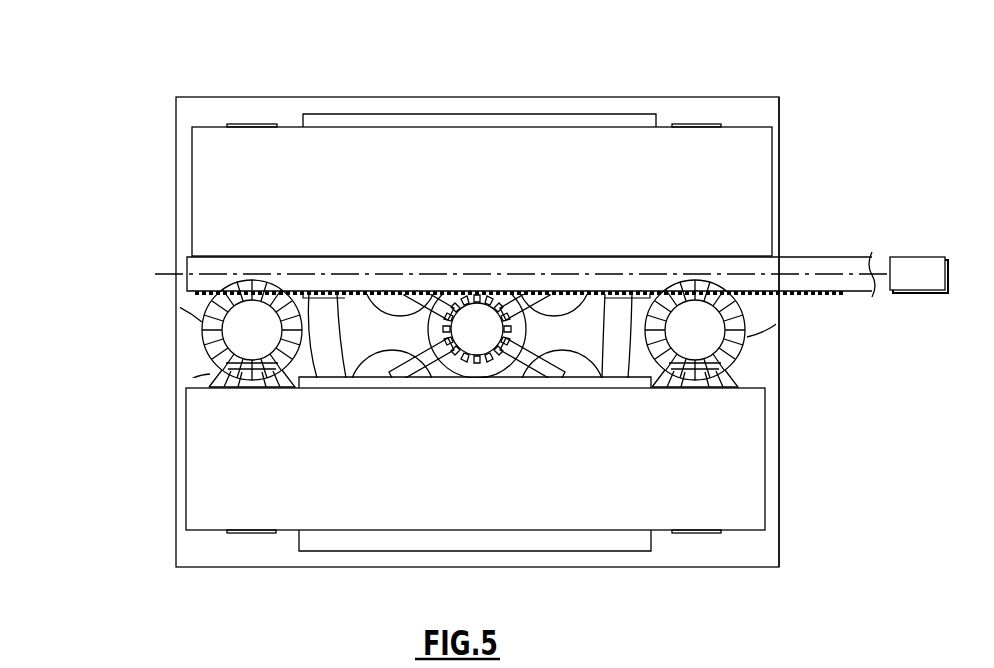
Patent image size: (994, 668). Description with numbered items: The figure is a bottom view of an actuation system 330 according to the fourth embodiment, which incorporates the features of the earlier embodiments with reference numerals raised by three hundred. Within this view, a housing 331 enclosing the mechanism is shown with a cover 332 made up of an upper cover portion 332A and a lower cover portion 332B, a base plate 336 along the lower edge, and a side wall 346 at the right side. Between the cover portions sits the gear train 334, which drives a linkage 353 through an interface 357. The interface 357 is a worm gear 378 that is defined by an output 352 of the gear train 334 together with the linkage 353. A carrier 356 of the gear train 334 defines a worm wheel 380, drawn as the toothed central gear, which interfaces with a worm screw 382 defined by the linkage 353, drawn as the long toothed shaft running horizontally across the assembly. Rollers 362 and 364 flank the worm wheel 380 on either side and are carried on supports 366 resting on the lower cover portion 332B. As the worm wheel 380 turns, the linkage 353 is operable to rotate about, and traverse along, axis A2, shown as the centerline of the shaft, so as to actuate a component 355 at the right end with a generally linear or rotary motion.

The actuation system 330 is at (180, 48).
The housing 331 is at (262, 78).
The cover 332 is at (401, 319).
The upper cover portion 332A is at (184, 162).
The lower cover portion 332B is at (170, 448).
The gear train 334 is at (170, 356).
The base plate 336 is at (628, 558).
The side wall 346 is at (775, 471).
The output 352 is at (519, 262).
The linkage 353 is at (848, 262).
The component 355 is at (938, 286).
The carrier 356 is at (541, 331).
The interface 357 is at (476, 255).
The first roller 362 is at (204, 316).
The second roller 364 is at (745, 338).
The roller support 366 is at (212, 378).
The worm gear 378 is at (390, 300).
The worm wheel 380 is at (427, 331).
The worm screw 382 is at (497, 284).
The axis A2 is at (164, 273).